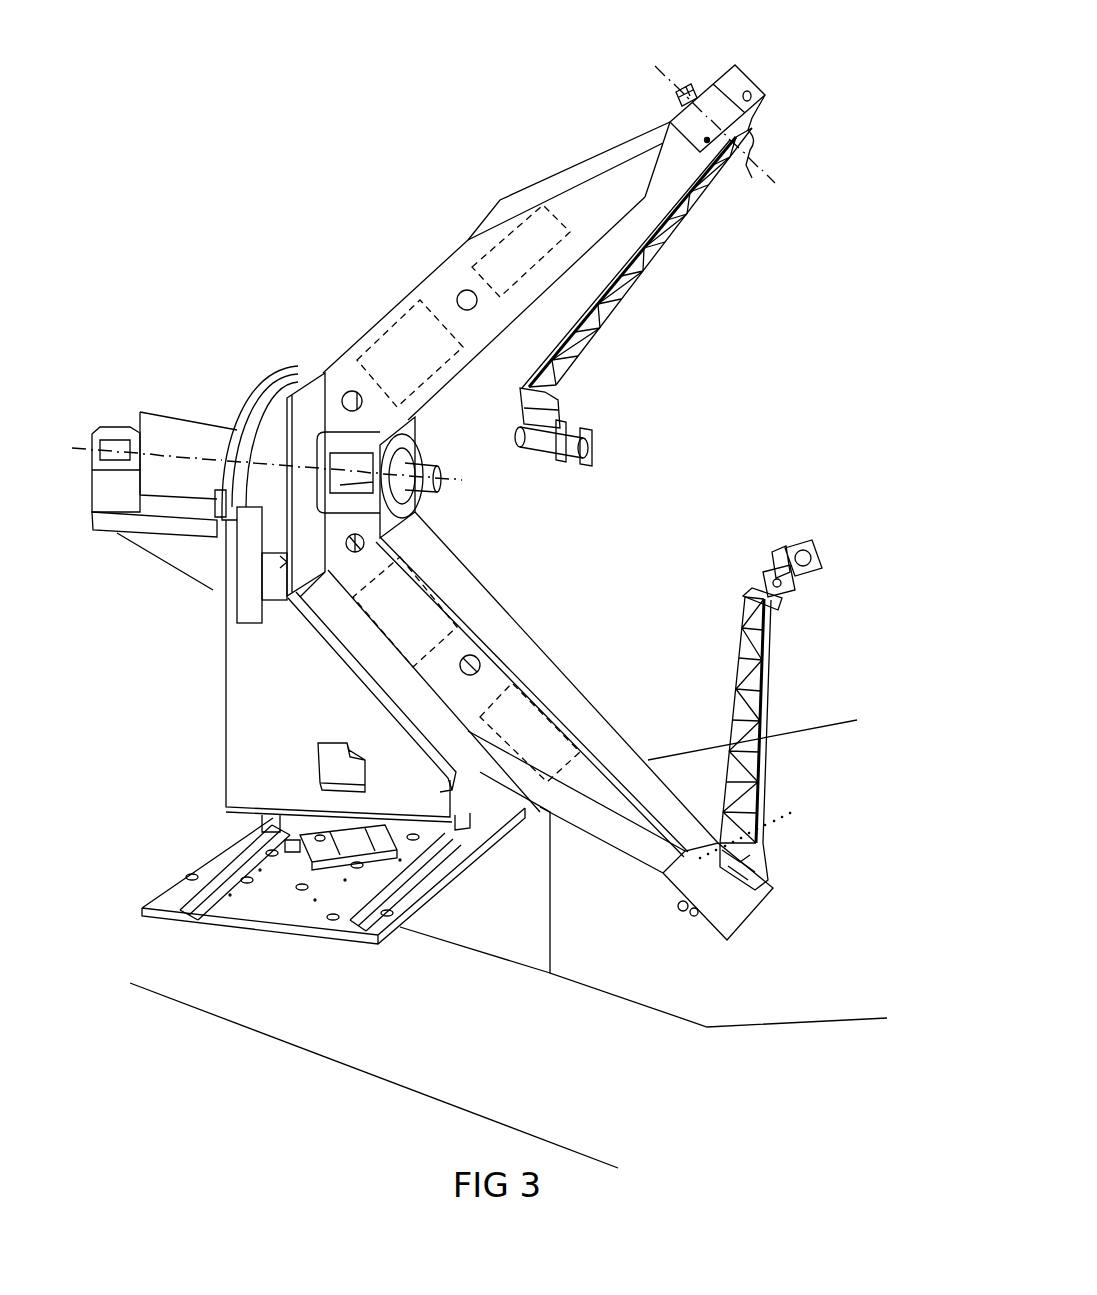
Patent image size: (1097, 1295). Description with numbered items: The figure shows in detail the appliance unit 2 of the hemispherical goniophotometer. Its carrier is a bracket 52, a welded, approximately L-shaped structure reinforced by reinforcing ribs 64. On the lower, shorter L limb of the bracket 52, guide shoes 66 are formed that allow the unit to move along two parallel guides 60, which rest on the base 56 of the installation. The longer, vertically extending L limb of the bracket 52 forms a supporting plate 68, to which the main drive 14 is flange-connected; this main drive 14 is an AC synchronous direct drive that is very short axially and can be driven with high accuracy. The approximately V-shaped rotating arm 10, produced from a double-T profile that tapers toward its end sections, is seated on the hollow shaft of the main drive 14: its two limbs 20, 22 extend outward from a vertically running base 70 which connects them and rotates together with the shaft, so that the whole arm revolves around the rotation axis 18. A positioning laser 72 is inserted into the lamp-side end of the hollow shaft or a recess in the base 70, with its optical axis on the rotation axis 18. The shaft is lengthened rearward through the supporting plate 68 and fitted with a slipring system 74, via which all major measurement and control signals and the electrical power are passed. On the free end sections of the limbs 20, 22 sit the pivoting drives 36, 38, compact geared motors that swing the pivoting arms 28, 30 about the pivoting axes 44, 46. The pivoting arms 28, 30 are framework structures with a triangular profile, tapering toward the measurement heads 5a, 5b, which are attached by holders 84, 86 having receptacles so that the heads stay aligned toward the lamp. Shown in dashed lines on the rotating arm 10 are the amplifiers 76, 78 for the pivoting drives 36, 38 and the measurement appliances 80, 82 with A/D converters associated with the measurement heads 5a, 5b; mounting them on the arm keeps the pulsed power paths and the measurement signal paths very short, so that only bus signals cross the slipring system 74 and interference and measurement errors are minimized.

The appliance unit 2 is at (262, 365).
The rotating arm 10 is at (418, 286).
The main drive 14 is at (270, 440).
The rotation axis 18 is at (78, 448).
The limb 20 is at (640, 828).
The limb 22 is at (617, 178).
The pivoting arm 28 is at (768, 712).
The pivoting arm 30 is at (707, 225).
The pivoting drive 36 is at (743, 872).
The pivoting drive 38 is at (733, 137).
The pivoting axis 44 is at (790, 813).
The pivoting axis 46 is at (665, 70).
The bracket 52 is at (228, 678).
The base 56 is at (628, 1074).
The guides 60 is at (355, 925).
The reinforcing ribs 64 is at (282, 720).
The guide shoes 66 is at (262, 822).
The supporting plate 68 is at (236, 606).
The base 70 is at (420, 430).
The positioning laser 72 is at (445, 485).
The slipring system 74 is at (165, 427).
The amplifier 76 is at (533, 723).
The amplifier 78 is at (522, 250).
The measurement appliance 80 is at (415, 630).
The measurement appliance 82 is at (405, 340).
The holder 84 is at (793, 580).
The holder 86 is at (560, 413).
The measurement head 5a is at (812, 555).
The measurement head 5b is at (590, 440).